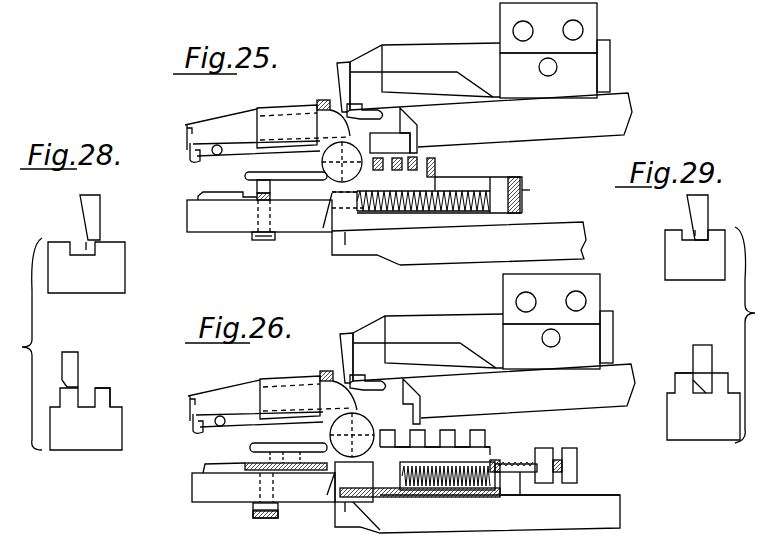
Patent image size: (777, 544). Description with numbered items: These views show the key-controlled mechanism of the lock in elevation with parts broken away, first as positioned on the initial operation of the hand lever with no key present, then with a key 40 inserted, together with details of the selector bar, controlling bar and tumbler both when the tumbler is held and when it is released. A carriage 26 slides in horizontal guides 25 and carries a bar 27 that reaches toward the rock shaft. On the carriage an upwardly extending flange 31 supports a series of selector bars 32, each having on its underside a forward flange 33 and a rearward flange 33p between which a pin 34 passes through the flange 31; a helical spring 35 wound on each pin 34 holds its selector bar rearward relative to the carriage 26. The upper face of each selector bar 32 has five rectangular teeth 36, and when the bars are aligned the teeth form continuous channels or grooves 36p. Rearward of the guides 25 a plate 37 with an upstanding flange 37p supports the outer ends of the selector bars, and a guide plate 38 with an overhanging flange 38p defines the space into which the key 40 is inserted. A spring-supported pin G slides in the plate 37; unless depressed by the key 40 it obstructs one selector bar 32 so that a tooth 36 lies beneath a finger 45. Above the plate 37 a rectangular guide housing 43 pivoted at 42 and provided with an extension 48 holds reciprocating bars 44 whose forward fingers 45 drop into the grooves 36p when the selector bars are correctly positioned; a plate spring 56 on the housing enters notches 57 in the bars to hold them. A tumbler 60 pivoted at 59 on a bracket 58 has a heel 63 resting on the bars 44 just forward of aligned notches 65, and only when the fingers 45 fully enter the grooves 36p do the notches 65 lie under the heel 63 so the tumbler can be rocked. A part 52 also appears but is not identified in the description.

In FIG. 25, the horizontal guides 25 is at (349, 250).
In FIG. 26, the horizontal guides 25 is at (340, 512).
In FIG. 25, the carriage 26 is at (433, 223).
In FIG. 26, the carriage 26 is at (470, 497).
In FIG. 25, the bar 27 is at (459, 243).
In FIG. 26, the bar 27 is at (477, 514).
In FIG. 25, the upwardly extending flange 31 is at (490, 185).
In FIG. 26, the upwardly extending flange 31 is at (498, 460).
In FIG. 25, the selector bars 32 is at (462, 181).
In FIG. 26, the selector bars 32 is at (544, 452).
In FIG. 28, the selector bars 32 is at (86, 419).
In FIG. 29, the selector bars 32 is at (705, 428).
In FIG. 25, the forward flange 33 is at (332, 218).
In FIG. 26, the forward flange 33 is at (390, 470).
In FIG. 25, the rearward flange 33p is at (538, 196).
In FIG. 26, the rearward flange 33p is at (354, 482).
In FIG. 25, the pin 34 is at (473, 214).
In FIG. 26, the pin 34 is at (514, 480).
In FIG. 25, the helical spring 35 is at (366, 247).
In FIG. 26, the helical spring 35 is at (425, 494).
In FIG. 25, the rectangular teeth 36 is at (405, 176).
In FIG. 26, the rectangular teeth 36 is at (448, 431).
In FIG. 28, the rectangular teeth 36 is at (110, 398).
In FIG. 29, the rectangular teeth 36 is at (687, 377).
In FIG. 26, the channels or grooves 36p is at (440, 446).
In FIG. 28, the channels or grooves 36p is at (87, 388).
In FIG. 29, the channels or grooves 36p is at (709, 383).
In FIG. 25, the plate 37 is at (259, 216).
In FIG. 26, the plate 37 is at (263, 487).
In FIG. 25, the flange 37p is at (320, 205).
In FIG. 26, the flange 37p is at (319, 484).
In FIG. 25, the guide plate 38 is at (198, 196).
In FIG. 26, the guide plate 38 is at (205, 465).
In FIG. 25, the overhanging flange 38p is at (243, 176).
In FIG. 26, the overhanging flange 38p is at (250, 447).
In FIG. 26, the key 40 is at (276, 487).
In FIG. 25, the pivotal mounting 42 is at (342, 146).
In FIG. 26, the pivotal mounting 42 is at (352, 419).
In FIG. 25, the guide housing 43 is at (303, 124).
In FIG. 26, the guide housing 43 is at (306, 395).
In FIG. 25, the bars 44 is at (252, 127).
In FIG. 26, the bars 44 is at (255, 399).
In FIG. 28, the bars 44 is at (86, 268).
In FIG. 29, the bars 44 is at (695, 255).
In FIG. 25, the fingers 45 is at (420, 141).
In FIG. 26, the fingers 45 is at (420, 407).
In FIG. 28, the fingers 45 is at (40, 344).
In FIG. 29, the fingers 45 is at (738, 335).
In FIG. 25, the extension 48 is at (491, 93).
In FIG. 26, the extension 48 is at (494, 364).
In FIG. 25, the lever arm 52 is at (437, 84).
In FIG. 26, the lever arm 52 is at (440, 357).
In FIG. 25, the plate spring 56 is at (182, 156).
In FIG. 26, the plate spring 56 is at (186, 429).
In FIG. 25, the notches 57 is at (190, 131).
In FIG. 26, the notches 57 is at (188, 392).
In FIG. 25, the bracket 58 is at (548, 28).
In FIG. 26, the bracket 58 is at (551, 299).
In FIG. 25, the pivot 59 is at (545, 71).
In FIG. 26, the pivot 59 is at (550, 342).
In FIG. 25, the tumbler 60 is at (425, 76).
In FIG. 26, the tumbler 60 is at (428, 347).
In FIG. 25, the heel 63 is at (331, 87).
In FIG. 26, the heel 63 is at (336, 358).
In FIG. 28, the heel 63 is at (100, 237).
In FIG. 29, the heel 63 is at (707, 227).
In FIG. 25, the notches 65 is at (348, 123).
In FIG. 26, the notches 65 is at (365, 395).
In FIG. 28, the notches 65 is at (77, 243).
In FIG. 29, the notches 65 is at (687, 230).
In FIG. 25, the pin G is at (263, 246).
In FIG. 26, the pin G is at (265, 522).